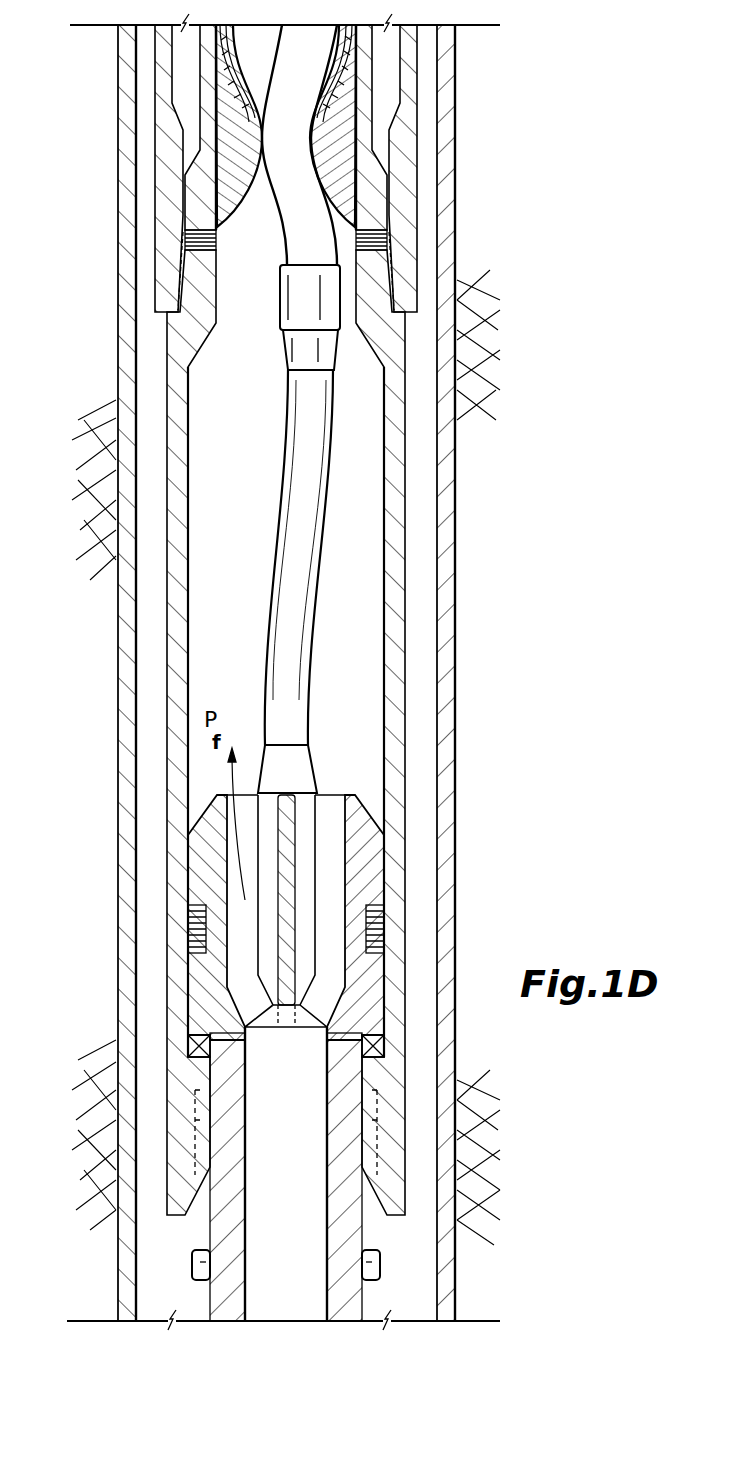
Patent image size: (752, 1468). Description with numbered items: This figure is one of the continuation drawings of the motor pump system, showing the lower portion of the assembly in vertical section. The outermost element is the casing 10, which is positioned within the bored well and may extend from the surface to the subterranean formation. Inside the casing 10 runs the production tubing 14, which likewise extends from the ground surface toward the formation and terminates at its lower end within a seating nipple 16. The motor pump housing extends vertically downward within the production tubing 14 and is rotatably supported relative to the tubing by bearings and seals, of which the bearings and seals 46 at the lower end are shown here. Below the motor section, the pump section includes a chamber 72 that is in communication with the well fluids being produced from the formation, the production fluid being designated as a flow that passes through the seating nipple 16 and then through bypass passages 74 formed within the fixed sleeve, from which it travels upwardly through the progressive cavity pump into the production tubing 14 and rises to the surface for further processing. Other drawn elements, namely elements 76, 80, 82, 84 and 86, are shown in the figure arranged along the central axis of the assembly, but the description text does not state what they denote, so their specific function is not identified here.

The casing 10 is at (122, 216).
The production tubing 14 is at (398, 497).
The seating nipple 16 is at (355, 1230).
The bearings and seals 46 is at (380, 250).
The chamber 72 is at (232, 277).
The bypass passages 74 is at (330, 852).
The flexible tube 76 is at (315, 392).
The tube nose 80 is at (310, 72).
The seal 82 is at (203, 997).
The seat 84 is at (372, 182).
The seal ring 86 is at (322, 128).